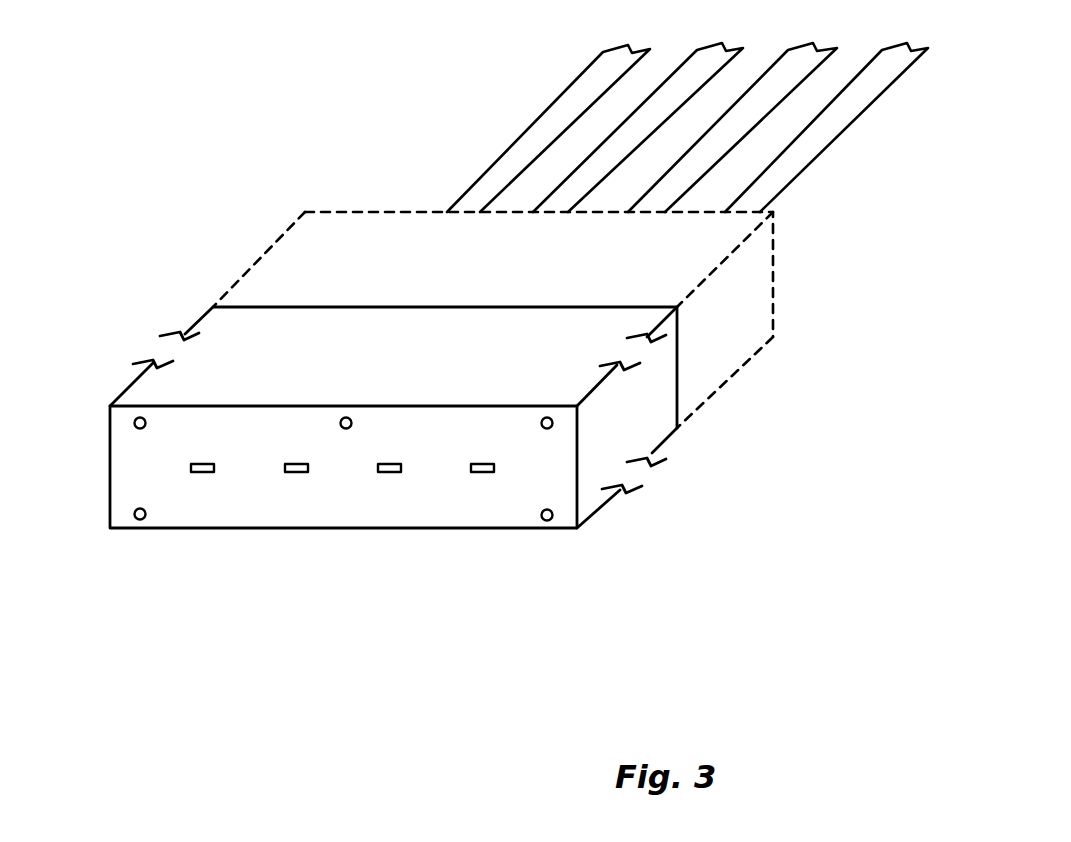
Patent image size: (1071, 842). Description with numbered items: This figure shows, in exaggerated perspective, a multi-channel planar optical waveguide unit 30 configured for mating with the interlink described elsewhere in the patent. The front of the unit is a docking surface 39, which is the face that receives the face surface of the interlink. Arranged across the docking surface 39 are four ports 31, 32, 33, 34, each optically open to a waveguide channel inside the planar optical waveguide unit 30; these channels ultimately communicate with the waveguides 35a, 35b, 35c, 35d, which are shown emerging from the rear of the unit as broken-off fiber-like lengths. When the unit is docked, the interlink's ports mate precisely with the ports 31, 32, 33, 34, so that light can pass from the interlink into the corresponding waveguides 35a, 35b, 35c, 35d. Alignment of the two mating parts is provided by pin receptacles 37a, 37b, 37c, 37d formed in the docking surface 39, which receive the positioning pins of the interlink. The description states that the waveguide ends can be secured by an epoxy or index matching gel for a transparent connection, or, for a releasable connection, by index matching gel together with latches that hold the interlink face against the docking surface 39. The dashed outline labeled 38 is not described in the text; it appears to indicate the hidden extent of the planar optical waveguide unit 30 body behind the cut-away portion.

The multi-channel planar optical waveguide unit 30 is at (435, 473).
The port 31 is at (477, 473).
The port 32 is at (392, 473).
The port 33 is at (341, 429).
The port 34 is at (202, 474).
The waveguide 35a is at (517, 155).
The waveguide 35b is at (635, 132).
The waveguide 35c is at (757, 102).
The waveguide 35d is at (783, 173).
The pin receptacle 37a is at (549, 523).
The pin receptacle 37b is at (549, 431).
The pin receptacle 37c is at (136, 431).
The pin receptacle 37d is at (137, 521).
The housing cover outline 38 is at (320, 260).
The docking surface 39 is at (413, 497).